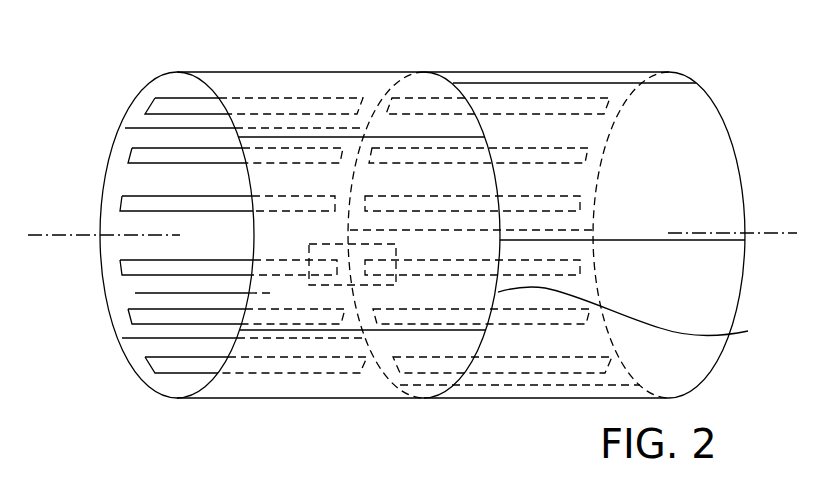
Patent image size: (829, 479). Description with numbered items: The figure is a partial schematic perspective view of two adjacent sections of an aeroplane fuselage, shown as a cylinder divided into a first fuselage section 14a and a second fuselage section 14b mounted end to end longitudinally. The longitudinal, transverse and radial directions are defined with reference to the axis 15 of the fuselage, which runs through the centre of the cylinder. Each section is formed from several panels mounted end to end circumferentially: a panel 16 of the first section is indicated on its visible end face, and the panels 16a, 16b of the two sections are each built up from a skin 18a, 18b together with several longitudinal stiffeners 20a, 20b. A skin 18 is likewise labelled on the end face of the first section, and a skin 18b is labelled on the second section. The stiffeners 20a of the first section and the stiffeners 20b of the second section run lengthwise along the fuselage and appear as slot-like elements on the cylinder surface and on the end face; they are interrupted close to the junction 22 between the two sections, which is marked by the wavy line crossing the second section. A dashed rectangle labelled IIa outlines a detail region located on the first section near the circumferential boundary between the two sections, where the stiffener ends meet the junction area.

The fuselage section 14a is at (285, 72).
The fuselage section 14b is at (545, 72).
The axis 15 is at (46, 234).
The panel 16 is at (145, 338).
The panel 16a is at (137, 129).
The panel 16b is at (692, 240).
The skin 18 is at (170, 348).
The skin 18a is at (135, 293).
The skin 18b is at (517, 340).
The longitudinal stiffener 20a is at (190, 98).
The longitudinal stiffener 20b is at (492, 105).
The junction 22 is at (635, 313).
The detail region IIa is at (322, 285).